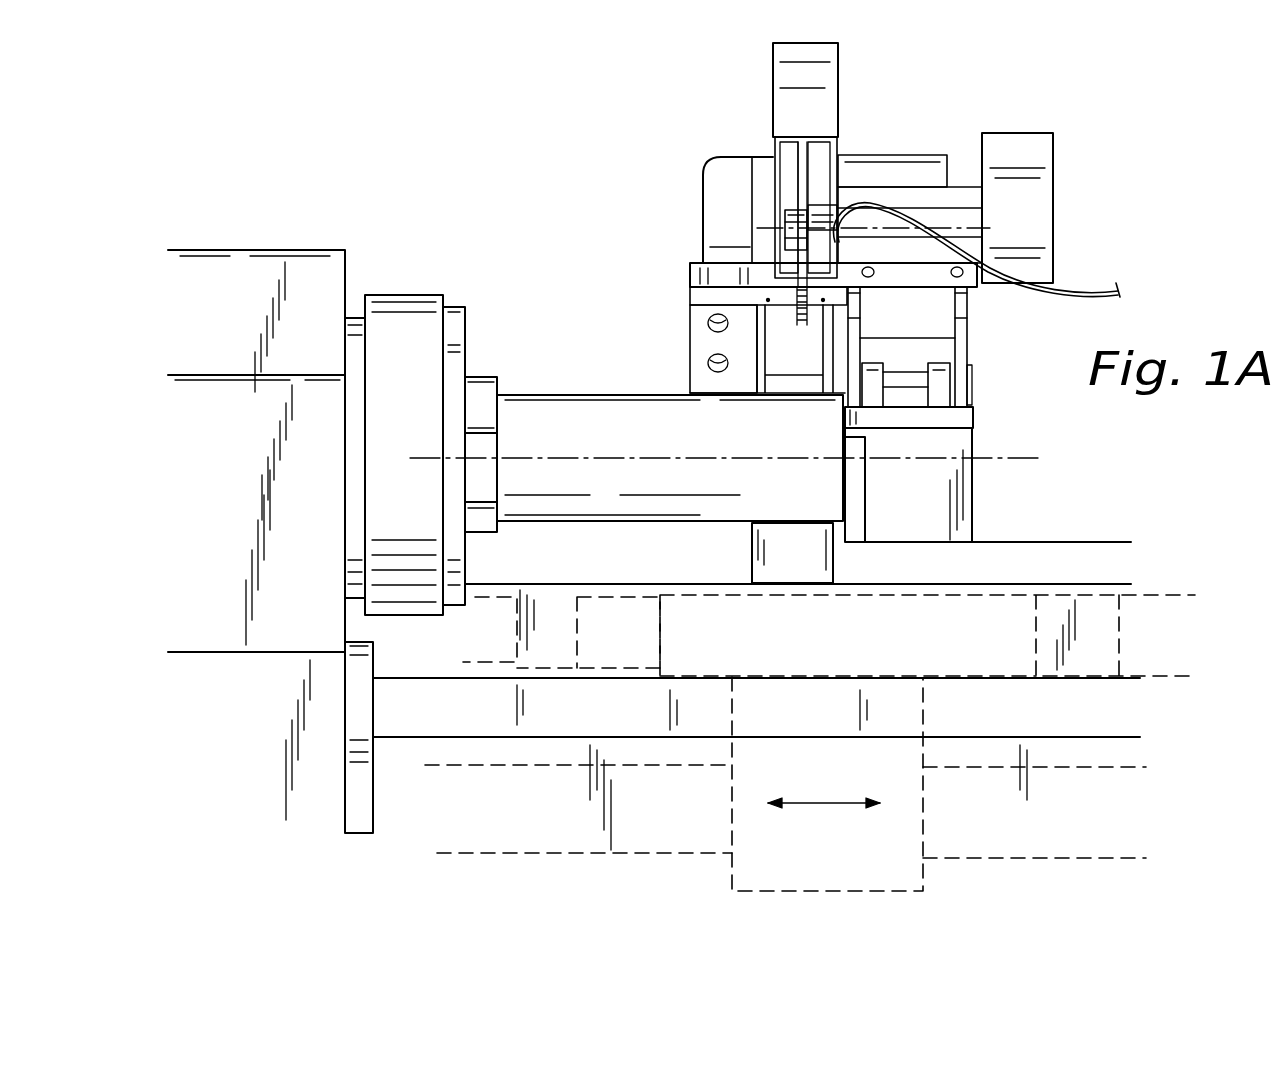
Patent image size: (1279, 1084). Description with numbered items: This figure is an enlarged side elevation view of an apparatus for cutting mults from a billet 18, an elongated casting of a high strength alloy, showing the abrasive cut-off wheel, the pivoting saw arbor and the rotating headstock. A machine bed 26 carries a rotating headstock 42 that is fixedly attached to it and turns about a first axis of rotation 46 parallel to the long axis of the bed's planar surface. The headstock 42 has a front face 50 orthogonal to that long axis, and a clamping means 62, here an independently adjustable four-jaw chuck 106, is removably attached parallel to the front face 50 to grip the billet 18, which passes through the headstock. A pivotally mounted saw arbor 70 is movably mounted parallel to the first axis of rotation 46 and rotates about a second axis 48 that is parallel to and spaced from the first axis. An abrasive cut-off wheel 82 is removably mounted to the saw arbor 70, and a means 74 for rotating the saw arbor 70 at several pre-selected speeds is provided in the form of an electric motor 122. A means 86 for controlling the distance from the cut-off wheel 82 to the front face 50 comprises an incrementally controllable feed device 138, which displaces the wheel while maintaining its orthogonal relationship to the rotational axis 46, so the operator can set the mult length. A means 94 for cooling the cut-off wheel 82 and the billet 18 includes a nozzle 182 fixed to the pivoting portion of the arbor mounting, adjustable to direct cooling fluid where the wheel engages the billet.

The rotating headstock 42 is at (260, 265).
The front face 50 is at (365, 348).
The independently adjustable four-jaw chuck 106 is at (410, 313).
The clamping means 62 is at (440, 300).
The first axis of rotation 46 is at (588, 460).
The billet 18 is at (565, 568).
The means for controlling the distance 86 is at (602, 832).
The incrementally controllable feed device 138 is at (695, 820).
The machine bed 26 is at (1007, 676).
The electric motor 122 is at (732, 157).
The nozzle 182 is at (825, 262).
The pivotally mounted saw arbor 70 is at (786, 222).
The second axis 48 is at (870, 228).
The means for rotating the saw arbor 74 is at (963, 203).
The means for cooling 94 is at (847, 240).
The abrasive cut-off wheel 82 is at (793, 317).